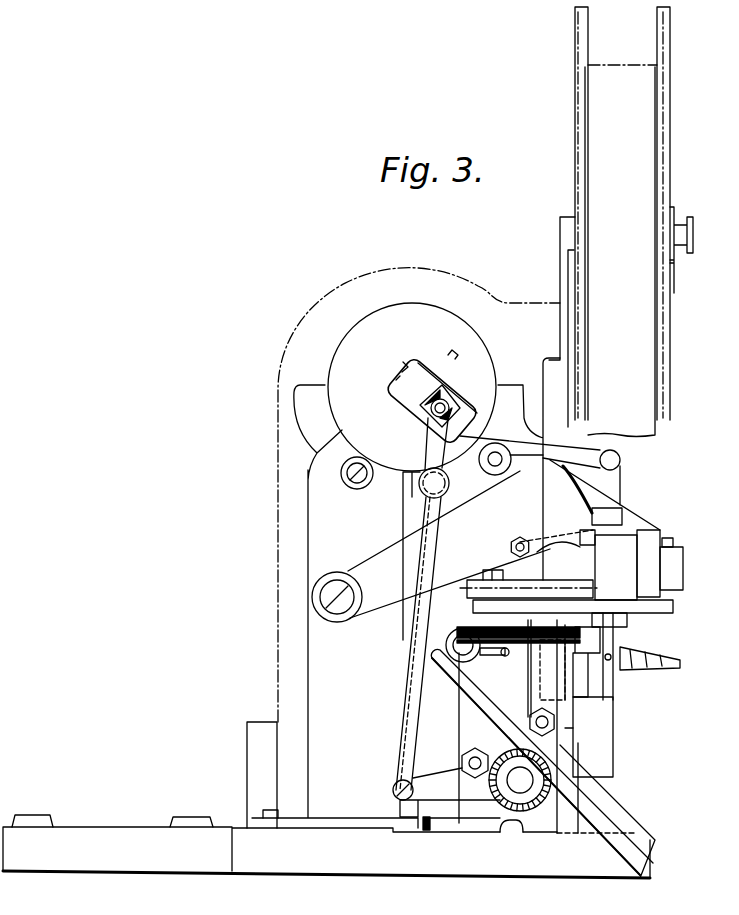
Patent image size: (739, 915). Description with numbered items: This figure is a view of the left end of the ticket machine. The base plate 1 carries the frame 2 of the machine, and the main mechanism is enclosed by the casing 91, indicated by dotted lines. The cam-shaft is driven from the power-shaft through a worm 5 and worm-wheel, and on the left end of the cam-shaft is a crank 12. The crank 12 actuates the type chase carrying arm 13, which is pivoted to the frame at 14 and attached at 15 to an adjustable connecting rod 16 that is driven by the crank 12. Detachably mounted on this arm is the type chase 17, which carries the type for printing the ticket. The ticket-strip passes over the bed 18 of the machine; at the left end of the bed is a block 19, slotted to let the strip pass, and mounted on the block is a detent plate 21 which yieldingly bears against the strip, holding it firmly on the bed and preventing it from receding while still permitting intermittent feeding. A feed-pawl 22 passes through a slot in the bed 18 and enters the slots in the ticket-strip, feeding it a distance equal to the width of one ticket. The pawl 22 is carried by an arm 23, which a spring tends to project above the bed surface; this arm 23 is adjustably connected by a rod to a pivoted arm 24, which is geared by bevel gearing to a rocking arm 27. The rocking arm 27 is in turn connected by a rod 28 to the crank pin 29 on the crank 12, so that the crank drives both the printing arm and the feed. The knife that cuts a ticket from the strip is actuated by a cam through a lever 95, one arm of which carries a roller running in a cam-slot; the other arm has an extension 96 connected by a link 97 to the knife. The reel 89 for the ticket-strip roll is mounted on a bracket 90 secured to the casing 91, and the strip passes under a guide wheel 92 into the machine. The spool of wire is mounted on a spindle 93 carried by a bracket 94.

The base plate 1 is at (326, 846).
The frame 2 is at (403, 594).
The worm 5 is at (412, 396).
The crank 12 is at (462, 399).
The type chase carrying arm 13 is at (470, 544).
The pivot 14 is at (335, 588).
The attachment point 15 is at (499, 463).
The adjustable connecting rod 16 is at (418, 406).
The type chase 17 is at (683, 563).
The bed 18 is at (673, 608).
The block 19 is at (640, 531).
The detent plate 21 is at (617, 518).
The feed-pawl 22 is at (627, 620).
The arm 23 is at (613, 714).
The arm 24 is at (565, 728).
The rocking arm 27 is at (506, 762).
The rod 28 is at (405, 706).
The crank pin 29 is at (423, 422).
The reel 89 is at (634, 222).
The bracket 90 is at (560, 283).
The casing 91 is at (490, 293).
The guide wheel 92 is at (548, 565).
The spindle 93 is at (505, 713).
The bracket 94 is at (624, 789).
The lever 95 is at (530, 452).
The extension 96 is at (621, 461).
The link 97 is at (617, 479).